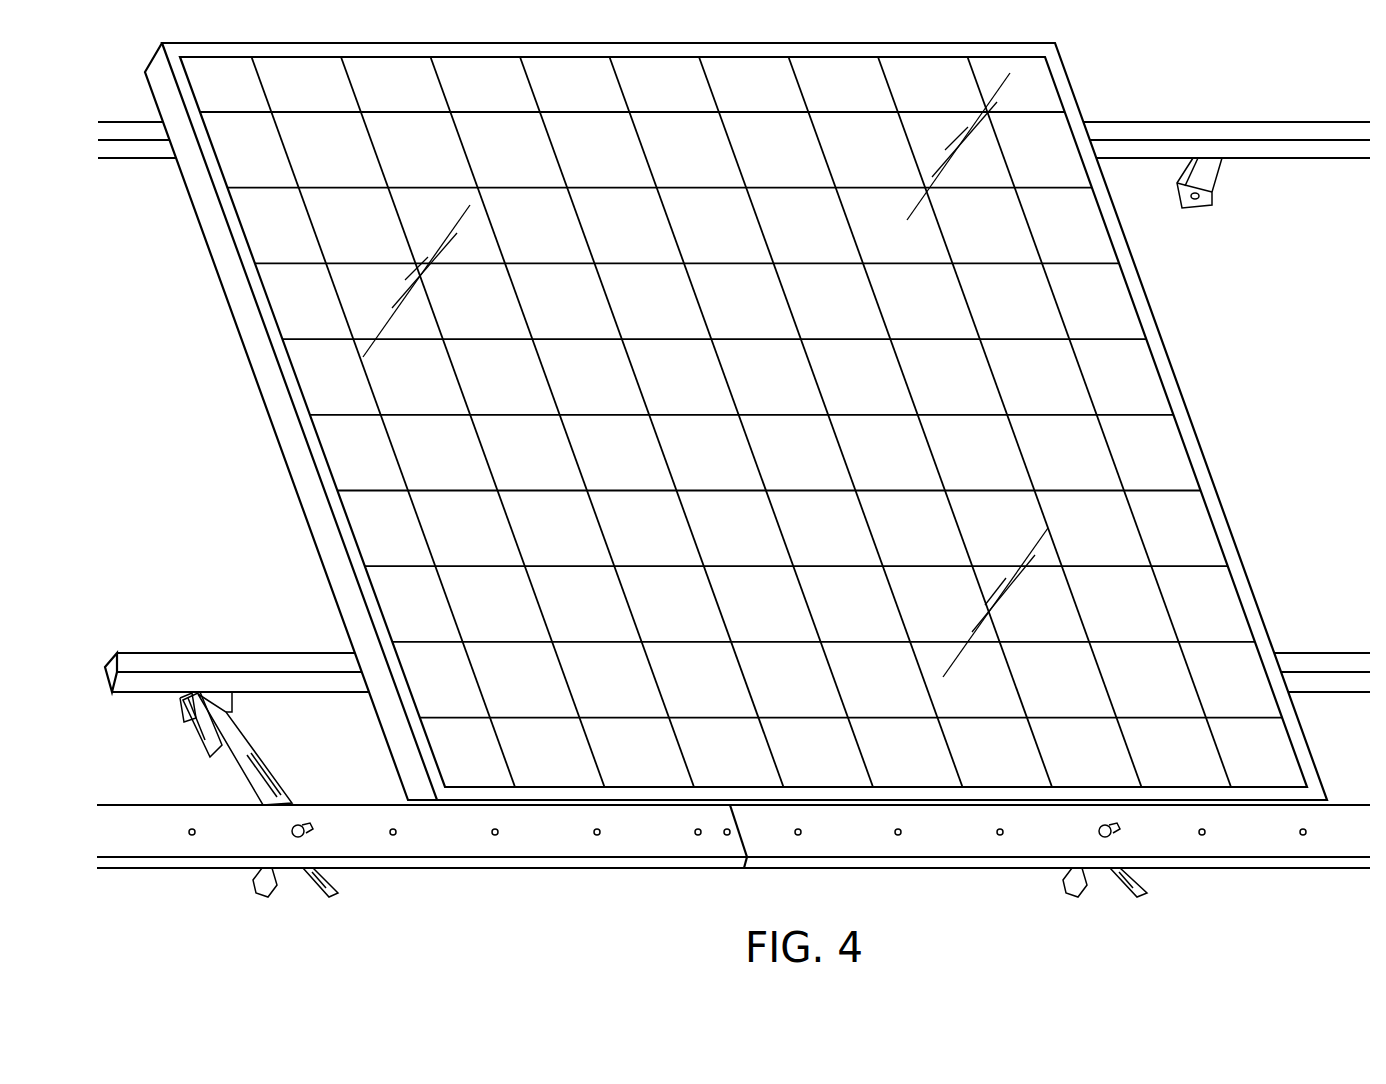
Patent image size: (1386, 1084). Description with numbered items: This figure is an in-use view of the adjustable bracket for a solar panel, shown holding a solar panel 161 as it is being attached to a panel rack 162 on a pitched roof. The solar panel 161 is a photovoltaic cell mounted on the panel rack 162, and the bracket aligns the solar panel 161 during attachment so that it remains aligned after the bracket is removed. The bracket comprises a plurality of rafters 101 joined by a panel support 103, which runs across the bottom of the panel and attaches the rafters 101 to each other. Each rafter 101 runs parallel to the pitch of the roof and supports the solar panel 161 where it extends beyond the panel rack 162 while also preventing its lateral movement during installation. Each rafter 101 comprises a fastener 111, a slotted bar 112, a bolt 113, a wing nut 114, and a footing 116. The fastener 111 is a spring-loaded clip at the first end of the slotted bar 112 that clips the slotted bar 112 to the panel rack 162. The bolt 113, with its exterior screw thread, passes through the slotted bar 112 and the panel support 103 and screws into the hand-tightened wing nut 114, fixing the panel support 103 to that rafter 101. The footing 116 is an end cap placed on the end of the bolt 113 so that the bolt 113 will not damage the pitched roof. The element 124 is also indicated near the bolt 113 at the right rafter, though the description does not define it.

The rafters 101 is at (255, 745).
The panel support 103 is at (665, 860).
The fastener 111 is at (205, 738).
The slotted bar 112 is at (245, 722).
The bolt 113 is at (302, 820).
The wing nut 114 is at (308, 834).
The footing 116 is at (268, 893).
The washer 124 is at (1118, 828).
The solar panels 161 is at (1137, 272).
The panel rack 162 is at (1315, 132).